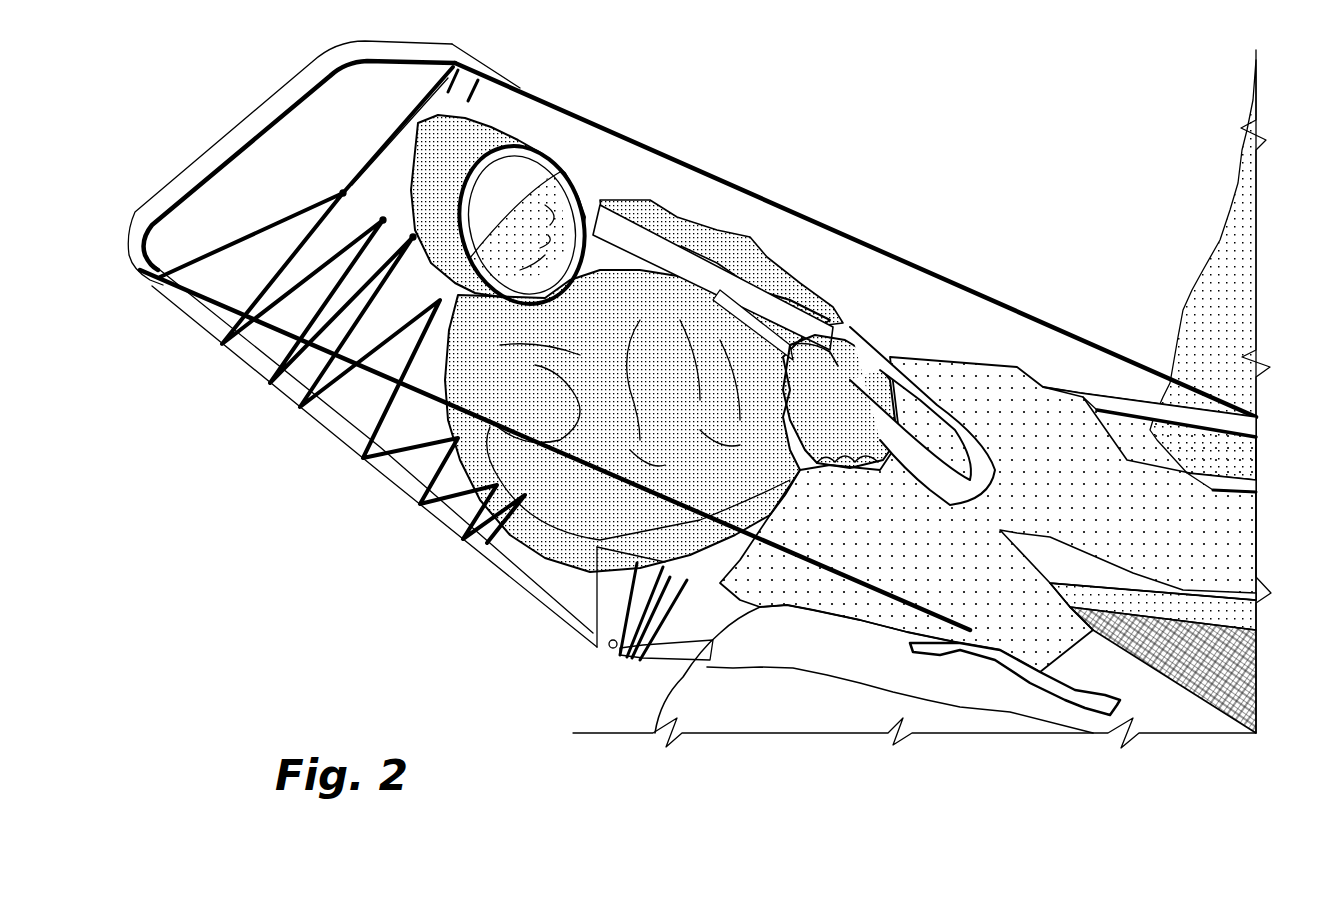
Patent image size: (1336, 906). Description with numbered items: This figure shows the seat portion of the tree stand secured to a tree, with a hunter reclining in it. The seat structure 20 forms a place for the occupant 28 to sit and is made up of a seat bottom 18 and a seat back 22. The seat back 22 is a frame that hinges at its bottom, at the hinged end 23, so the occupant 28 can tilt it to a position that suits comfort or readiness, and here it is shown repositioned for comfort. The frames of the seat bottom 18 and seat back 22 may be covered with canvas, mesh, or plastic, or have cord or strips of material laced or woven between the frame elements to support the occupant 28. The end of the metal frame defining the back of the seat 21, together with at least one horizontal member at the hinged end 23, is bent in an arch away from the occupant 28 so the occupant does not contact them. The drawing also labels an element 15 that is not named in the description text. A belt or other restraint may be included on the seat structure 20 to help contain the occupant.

The backrest 15 is at (1205, 272).
The seat bottom 18 is at (690, 665).
The seat structure 20 is at (610, 114).
The back of the seat 21 is at (258, 133).
The seat back 22 is at (385, 406).
The hinged end 23 is at (608, 652).
The occupant 28 is at (702, 227).